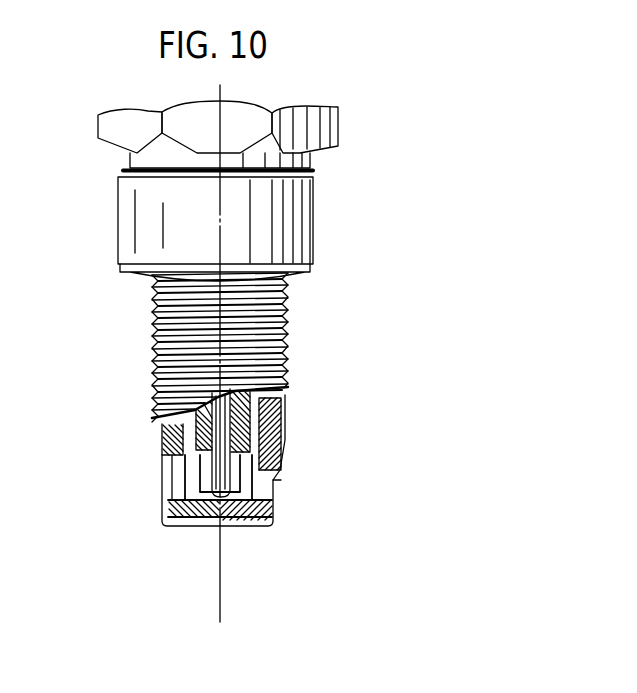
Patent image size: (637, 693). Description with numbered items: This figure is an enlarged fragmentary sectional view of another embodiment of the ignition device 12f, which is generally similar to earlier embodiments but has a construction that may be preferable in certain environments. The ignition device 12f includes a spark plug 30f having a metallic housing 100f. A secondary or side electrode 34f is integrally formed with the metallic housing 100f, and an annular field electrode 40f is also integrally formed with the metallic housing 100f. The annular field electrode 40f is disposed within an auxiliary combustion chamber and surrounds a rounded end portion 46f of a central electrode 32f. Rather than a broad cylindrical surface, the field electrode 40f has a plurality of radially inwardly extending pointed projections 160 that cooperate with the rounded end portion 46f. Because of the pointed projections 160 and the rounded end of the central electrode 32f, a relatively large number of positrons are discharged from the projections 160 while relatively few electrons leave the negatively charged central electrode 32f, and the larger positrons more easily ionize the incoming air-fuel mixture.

The ignition device 12f is at (280, 344).
The spark plug 30f is at (122, 136).
The metallic housing 100f is at (312, 232).
The central electrode 32f is at (224, 426).
The side electrode 34f is at (258, 483).
The rounded end portion 46f is at (240, 504).
The annular field electrode 40f is at (168, 530).
The projections 160 is at (228, 523).